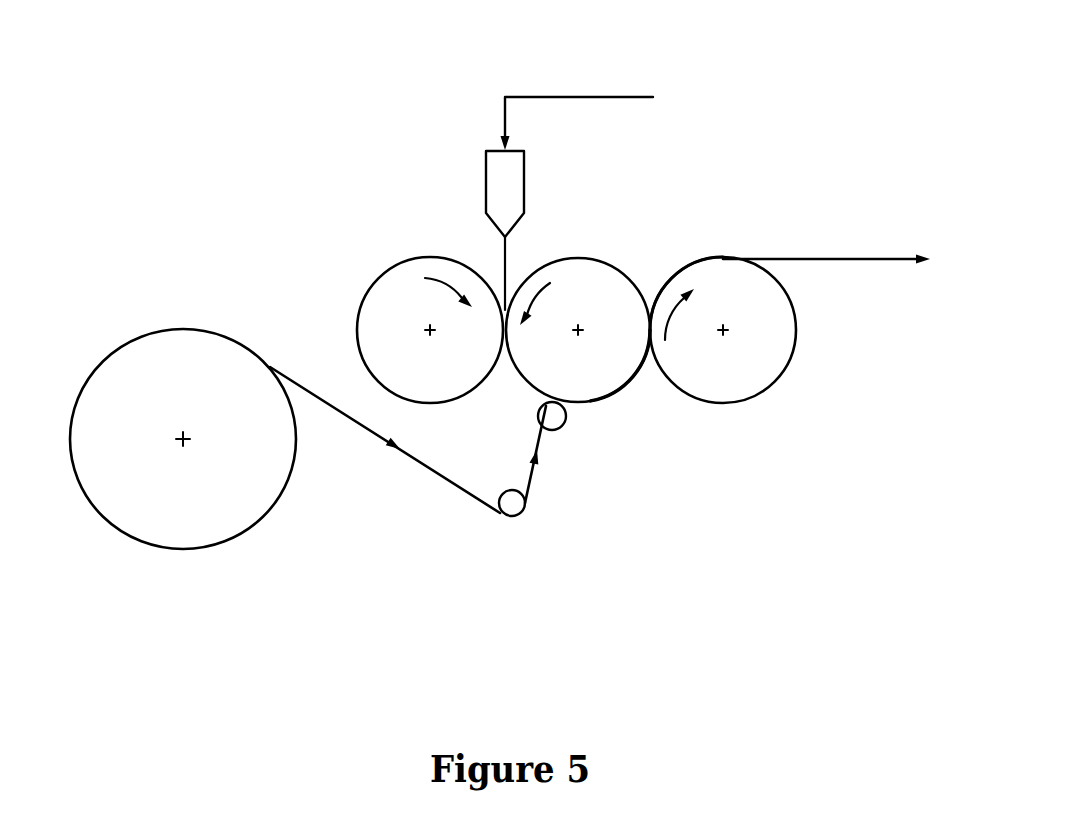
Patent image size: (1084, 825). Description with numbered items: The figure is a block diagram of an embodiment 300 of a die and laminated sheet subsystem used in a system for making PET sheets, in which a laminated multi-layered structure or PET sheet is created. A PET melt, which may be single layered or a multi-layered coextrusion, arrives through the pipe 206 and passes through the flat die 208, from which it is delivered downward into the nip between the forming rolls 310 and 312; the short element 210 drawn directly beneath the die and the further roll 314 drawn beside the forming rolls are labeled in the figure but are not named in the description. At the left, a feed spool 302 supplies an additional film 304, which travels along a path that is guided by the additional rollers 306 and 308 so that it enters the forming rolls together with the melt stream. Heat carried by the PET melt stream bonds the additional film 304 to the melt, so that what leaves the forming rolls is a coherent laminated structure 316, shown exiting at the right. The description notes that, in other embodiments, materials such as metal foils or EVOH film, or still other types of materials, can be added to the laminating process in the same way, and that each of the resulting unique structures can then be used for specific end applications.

The subsystem 300 is at (812, 110).
The pipe 206 is at (580, 97).
The flat die 208 is at (527, 178).
The dispensing line 210 is at (507, 236).
The feed spool 302 is at (182, 548).
The additional film 304 is at (353, 418).
The roller 306 is at (512, 517).
The roller 308 is at (565, 420).
The forming roll 310 is at (380, 300).
The forming roll 312 is at (623, 390).
The backing roller 314 is at (770, 385).
The laminated structure 316 is at (850, 263).